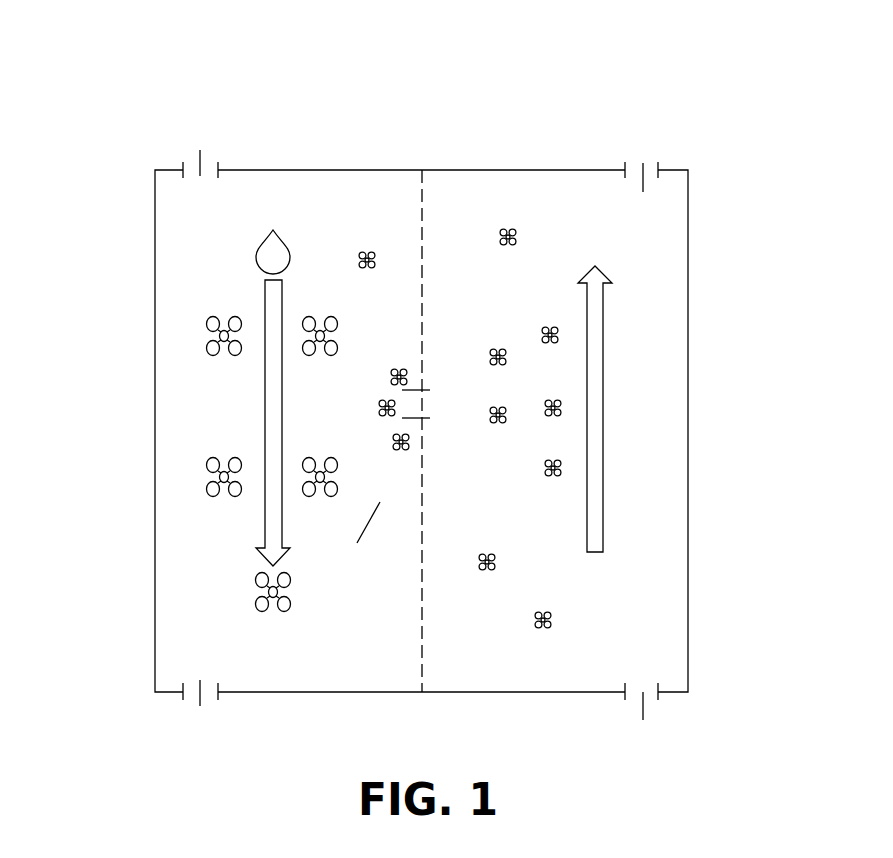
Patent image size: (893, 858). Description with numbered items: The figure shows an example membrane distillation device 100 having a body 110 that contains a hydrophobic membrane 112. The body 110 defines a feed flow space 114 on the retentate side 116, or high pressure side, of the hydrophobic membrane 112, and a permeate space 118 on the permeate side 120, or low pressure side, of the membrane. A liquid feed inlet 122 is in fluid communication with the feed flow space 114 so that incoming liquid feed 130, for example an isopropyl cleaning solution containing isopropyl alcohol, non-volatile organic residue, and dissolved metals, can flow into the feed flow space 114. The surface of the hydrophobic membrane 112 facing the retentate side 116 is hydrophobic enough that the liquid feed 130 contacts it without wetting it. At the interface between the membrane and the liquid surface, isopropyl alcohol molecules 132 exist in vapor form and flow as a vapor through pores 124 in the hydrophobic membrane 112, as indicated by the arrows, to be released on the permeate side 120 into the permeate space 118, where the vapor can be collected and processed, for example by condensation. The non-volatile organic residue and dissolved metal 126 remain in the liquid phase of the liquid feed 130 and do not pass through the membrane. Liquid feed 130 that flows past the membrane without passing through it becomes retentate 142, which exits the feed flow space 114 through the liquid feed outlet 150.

The membrane distillation device 100 is at (128, 66).
The body 110 is at (155, 270).
The hydrophobic membrane 112 is at (420, 431).
The feed flow space 114 is at (288, 208).
The retentate side 116 is at (385, 480).
The permeate space 118 is at (475, 300).
The permeate side 120 is at (446, 643).
The liquid feed inlet 122 is at (190, 165).
The pores 124 is at (425, 190).
The non-volatile organic residue and dissolved metal 126 is at (213, 356).
The liquid feed 130 is at (323, 291).
The isopropyl alcohol molecules 132 is at (368, 251).
The retentate 142 is at (200, 718).
The liquid feed outlet 150 is at (188, 696).